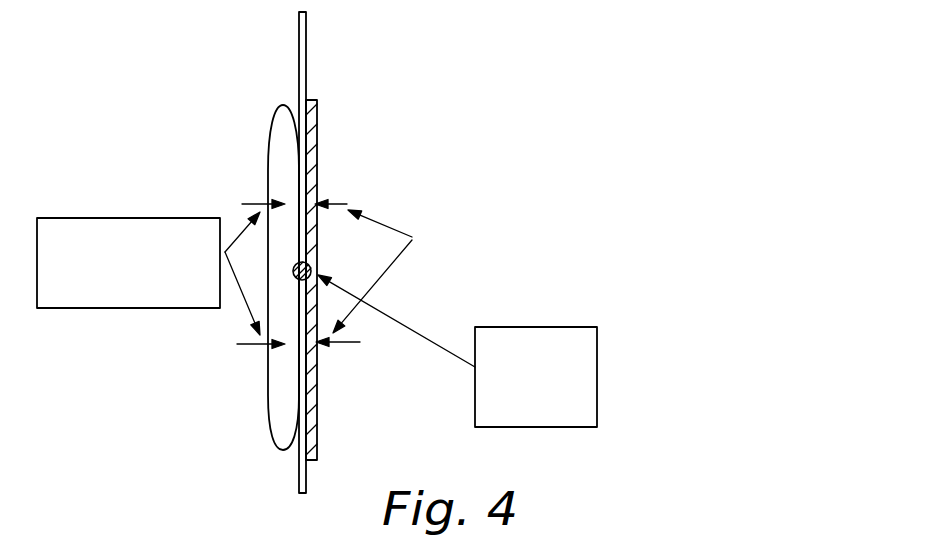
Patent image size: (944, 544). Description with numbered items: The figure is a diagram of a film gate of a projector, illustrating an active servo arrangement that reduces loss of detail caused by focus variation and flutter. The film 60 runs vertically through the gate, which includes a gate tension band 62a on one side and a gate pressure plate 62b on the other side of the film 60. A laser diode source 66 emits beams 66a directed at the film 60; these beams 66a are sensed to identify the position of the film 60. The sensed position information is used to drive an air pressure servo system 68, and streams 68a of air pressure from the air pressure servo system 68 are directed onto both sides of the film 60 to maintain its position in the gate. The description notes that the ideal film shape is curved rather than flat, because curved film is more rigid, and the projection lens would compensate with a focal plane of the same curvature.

The film 60 is at (306, 76).
The gate tension band 62a is at (268, 154).
The gate pressure plate 62b is at (317, 145).
The laser diode source 66 is at (597, 368).
The beams 66a is at (397, 322).
The air pressure servo system 68 is at (90, 310).
The streams of air pressure 68a is at (232, 240).